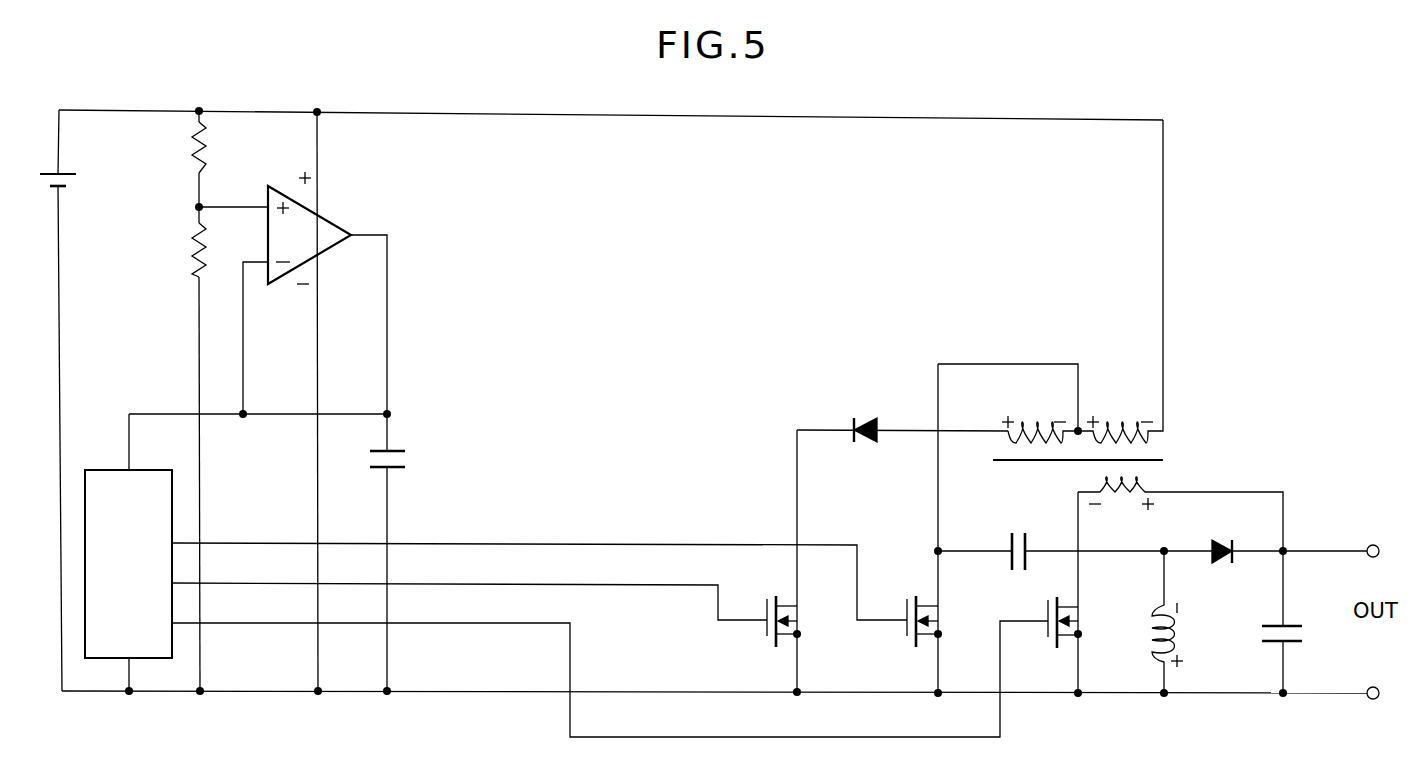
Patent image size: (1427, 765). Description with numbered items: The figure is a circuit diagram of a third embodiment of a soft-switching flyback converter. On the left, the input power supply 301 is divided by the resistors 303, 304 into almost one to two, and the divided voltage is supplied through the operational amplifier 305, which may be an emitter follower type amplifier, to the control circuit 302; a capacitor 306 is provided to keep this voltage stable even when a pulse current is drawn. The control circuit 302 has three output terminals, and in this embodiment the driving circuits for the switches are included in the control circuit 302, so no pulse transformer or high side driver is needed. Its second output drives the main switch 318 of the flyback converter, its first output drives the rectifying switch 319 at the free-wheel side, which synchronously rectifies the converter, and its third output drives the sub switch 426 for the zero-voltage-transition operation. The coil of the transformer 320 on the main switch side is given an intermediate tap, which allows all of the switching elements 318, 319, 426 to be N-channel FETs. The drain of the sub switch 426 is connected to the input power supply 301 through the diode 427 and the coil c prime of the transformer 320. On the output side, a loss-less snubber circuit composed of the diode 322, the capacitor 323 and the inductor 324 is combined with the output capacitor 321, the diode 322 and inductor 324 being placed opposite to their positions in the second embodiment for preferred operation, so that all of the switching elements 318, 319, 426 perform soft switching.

The input power supply 301 is at (75, 182).
The control circuit 302 is at (110, 470).
The resistor 303 is at (192, 160).
The resistor 304 is at (192, 258).
The operational amplifier 305 is at (330, 222).
The capacitor 306 is at (375, 477).
The main switch 318 is at (910, 597).
The rectifying switch 319 is at (1084, 618).
The transformer 320 is at (1058, 470).
The capacitor 321 is at (1303, 637).
The diode 322 is at (1214, 562).
The capacitor 323 is at (1016, 572).
The inductor 324 is at (1152, 638).
The sub switch 426 is at (770, 597).
The diode 427 is at (877, 420).